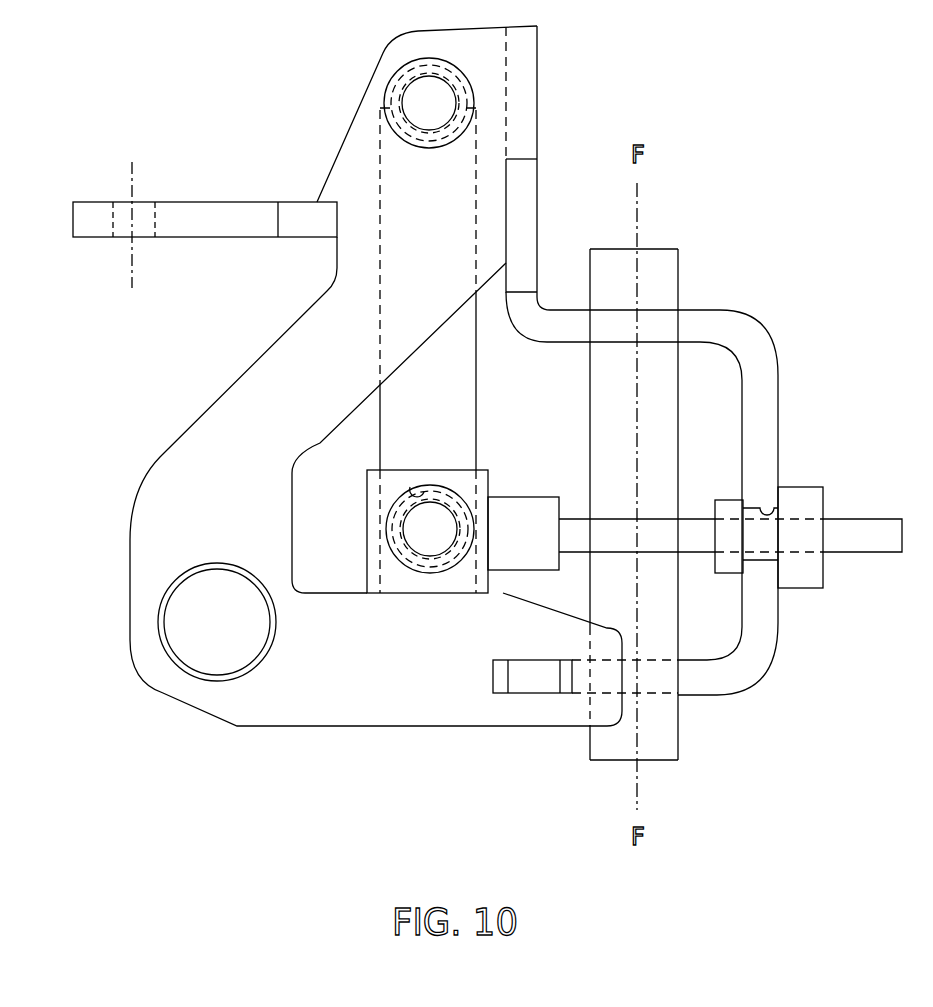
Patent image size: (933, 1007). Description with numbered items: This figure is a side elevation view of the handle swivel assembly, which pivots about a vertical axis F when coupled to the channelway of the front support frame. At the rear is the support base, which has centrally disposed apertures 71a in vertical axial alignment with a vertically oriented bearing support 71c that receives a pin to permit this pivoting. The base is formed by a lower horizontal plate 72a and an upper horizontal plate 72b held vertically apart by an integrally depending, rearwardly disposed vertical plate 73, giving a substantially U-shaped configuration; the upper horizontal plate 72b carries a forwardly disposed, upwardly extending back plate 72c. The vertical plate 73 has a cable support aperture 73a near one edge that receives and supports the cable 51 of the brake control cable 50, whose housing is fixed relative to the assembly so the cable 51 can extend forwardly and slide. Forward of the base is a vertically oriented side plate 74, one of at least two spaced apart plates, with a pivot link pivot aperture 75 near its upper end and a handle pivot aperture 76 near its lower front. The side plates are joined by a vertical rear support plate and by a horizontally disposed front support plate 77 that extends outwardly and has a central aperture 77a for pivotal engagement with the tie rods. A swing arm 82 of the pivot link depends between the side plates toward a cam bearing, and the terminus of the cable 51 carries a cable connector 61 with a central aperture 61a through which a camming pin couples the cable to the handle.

The brake control cable 50 is at (837, 553).
The cable 51 is at (593, 532).
The cable connector 61 is at (370, 568).
The aperture 61a is at (410, 487).
The apertures 71a is at (680, 290).
The bearing support 71c is at (592, 403).
The lower horizontal plate 72a is at (700, 678).
The upper horizontal plate 72b is at (702, 325).
The back plate 72c is at (532, 221).
The vertical plate 73 is at (765, 413).
The cable support aperture 73a is at (777, 510).
The side plate 74 is at (167, 460).
The pivot link pivot aperture 75 is at (415, 64).
The handle pivot aperture 76 is at (527, 92).
The front support plate 77 is at (240, 215).
The aperture 77a is at (155, 222).
The swing arm 82 is at (463, 442).